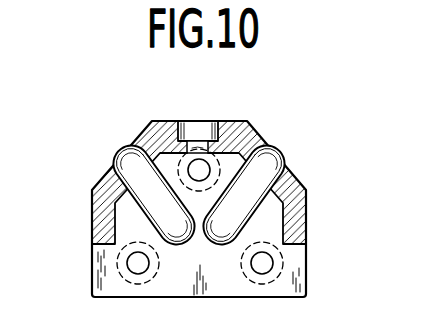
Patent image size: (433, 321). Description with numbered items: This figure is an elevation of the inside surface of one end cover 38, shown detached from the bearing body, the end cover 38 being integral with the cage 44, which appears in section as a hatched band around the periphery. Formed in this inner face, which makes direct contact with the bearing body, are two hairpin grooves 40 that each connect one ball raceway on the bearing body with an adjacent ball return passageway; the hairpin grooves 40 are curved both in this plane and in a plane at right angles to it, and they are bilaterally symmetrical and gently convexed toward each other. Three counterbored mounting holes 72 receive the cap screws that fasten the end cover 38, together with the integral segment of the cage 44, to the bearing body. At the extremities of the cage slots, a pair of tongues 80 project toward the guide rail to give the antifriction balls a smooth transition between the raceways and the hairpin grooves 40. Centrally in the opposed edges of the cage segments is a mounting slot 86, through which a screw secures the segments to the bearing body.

The end cover 38 is at (297, 125).
The hairpin groove 40 is at (148, 203).
The cage 44 is at (100, 192).
The counterbored mounting hole 72 is at (201, 168).
The tongue 80 is at (118, 153).
The mounting slot 86 is at (203, 127).